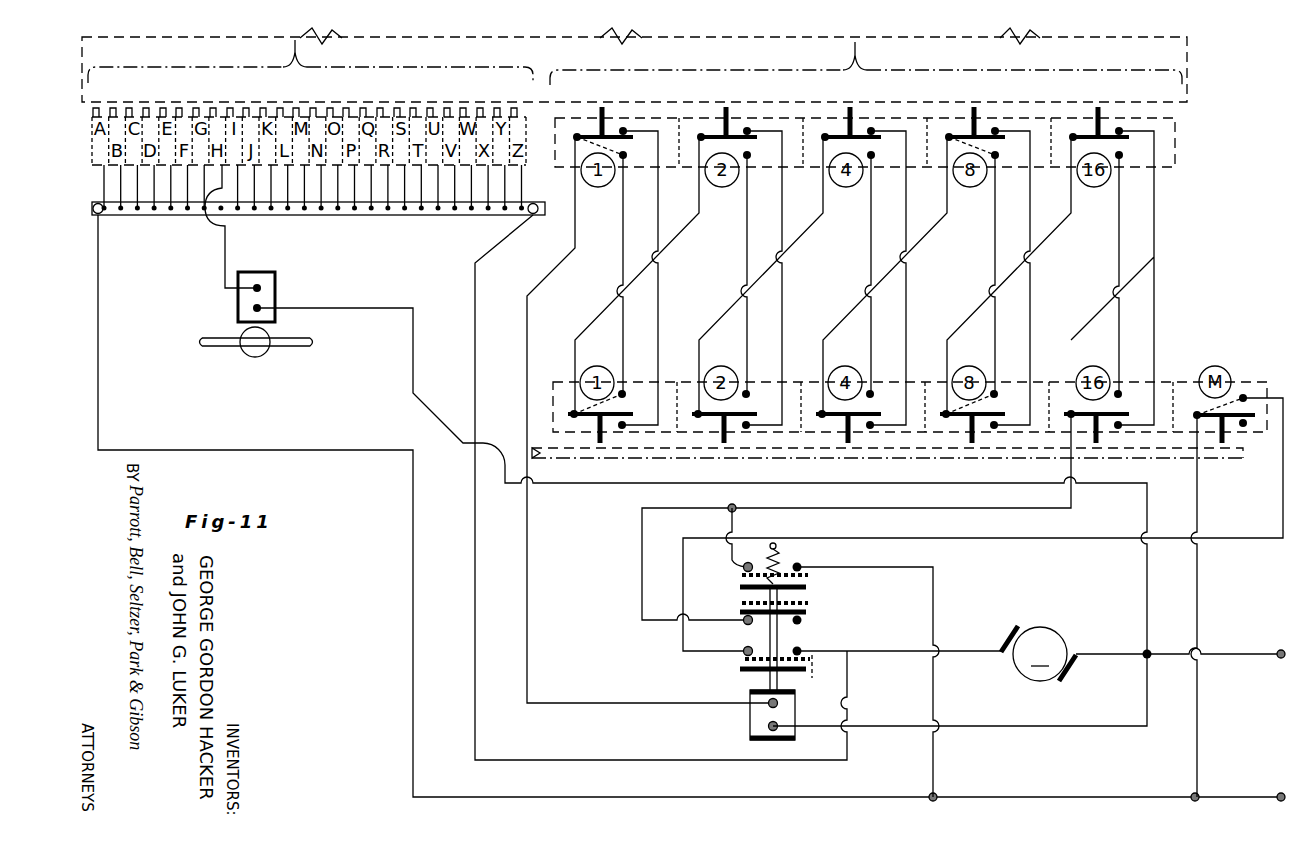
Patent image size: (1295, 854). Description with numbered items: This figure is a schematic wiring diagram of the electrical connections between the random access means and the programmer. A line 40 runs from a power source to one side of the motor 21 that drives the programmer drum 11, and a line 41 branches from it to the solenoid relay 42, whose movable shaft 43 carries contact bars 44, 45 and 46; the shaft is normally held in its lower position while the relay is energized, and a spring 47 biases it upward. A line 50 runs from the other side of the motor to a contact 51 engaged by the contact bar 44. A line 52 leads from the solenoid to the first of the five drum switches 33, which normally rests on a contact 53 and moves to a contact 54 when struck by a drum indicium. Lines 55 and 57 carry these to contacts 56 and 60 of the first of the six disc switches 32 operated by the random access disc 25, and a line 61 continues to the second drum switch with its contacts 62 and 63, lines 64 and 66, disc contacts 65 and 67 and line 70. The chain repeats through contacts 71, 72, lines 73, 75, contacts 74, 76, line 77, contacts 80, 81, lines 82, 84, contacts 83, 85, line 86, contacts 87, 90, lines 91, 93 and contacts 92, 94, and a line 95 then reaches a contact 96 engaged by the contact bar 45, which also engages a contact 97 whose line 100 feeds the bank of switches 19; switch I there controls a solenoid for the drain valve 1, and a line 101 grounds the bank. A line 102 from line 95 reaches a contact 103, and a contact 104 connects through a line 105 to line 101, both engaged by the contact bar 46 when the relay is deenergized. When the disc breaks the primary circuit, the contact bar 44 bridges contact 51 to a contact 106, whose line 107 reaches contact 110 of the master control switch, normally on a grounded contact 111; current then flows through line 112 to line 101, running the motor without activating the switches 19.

The drain valve 1 is at (245, 352).
The programmer drum 11 is at (1190, 72).
The bank of switches 19 is at (295, 38).
The motor 21 is at (1056, 626).
The random access disc 25 is at (560, 460).
The switches 32 is at (682, 368).
The switches 33 is at (851, 34).
The line 40 is at (1127, 652).
The line 41 is at (1030, 728).
The solenoid relay 42 is at (760, 712).
The movable shaft 43 is at (765, 672).
The contact bar 44 is at (812, 675).
The contact bar 45 is at (807, 609).
The contact bar 46 is at (807, 581).
The spring 47 is at (778, 558).
The line 50 is at (916, 655).
The contact 51 is at (801, 651).
The line 52 is at (552, 272).
The contact 53 is at (624, 127).
The contact 54 is at (627, 157).
The line 55 is at (659, 292).
The contact 56 is at (623, 429).
The line 57 is at (621, 230).
The contact 60 is at (626, 392).
The line 61 is at (668, 245).
The contact 62 is at (748, 127).
The contact 63 is at (751, 157).
The line 64 is at (783, 293).
The contact 65 is at (747, 429).
The line 66 is at (745, 228).
The contact 67 is at (750, 392).
The line 70 is at (790, 251).
The contact 71 is at (872, 127).
The contact 72 is at (875, 157).
The line 73 is at (907, 285).
The contact 74 is at (871, 429).
The line 75 is at (870, 242).
The contact 76 is at (874, 392).
The line 77 is at (933, 232).
The contact 80 is at (996, 127).
The contact 81 is at (999, 157).
The line 82 is at (1031, 292).
The contact 83 is at (995, 429).
The line 84 is at (994, 262).
The contact 85 is at (998, 392).
The line 86 is at (1049, 243).
The contact 87 is at (1120, 127).
The contact 90 is at (1123, 157).
The line 91 is at (1155, 292).
The contact 92 is at (1119, 429).
The line 93 is at (1118, 241).
The contact 94 is at (1122, 392).
The line 95 is at (1071, 500).
The contact 96 is at (745, 623).
The contact 97 is at (801, 620).
The line 100 is at (474, 343).
The line 101 is at (98, 334).
The line 102 is at (735, 513).
The contact 103 is at (744, 569).
The contact 104 is at (801, 567).
The line 105 is at (936, 580).
The contact 106 is at (745, 653).
The line 107 is at (681, 644).
The contact 110 is at (1243, 394).
The contact 111 is at (1244, 428).
The line 112 is at (1199, 504).